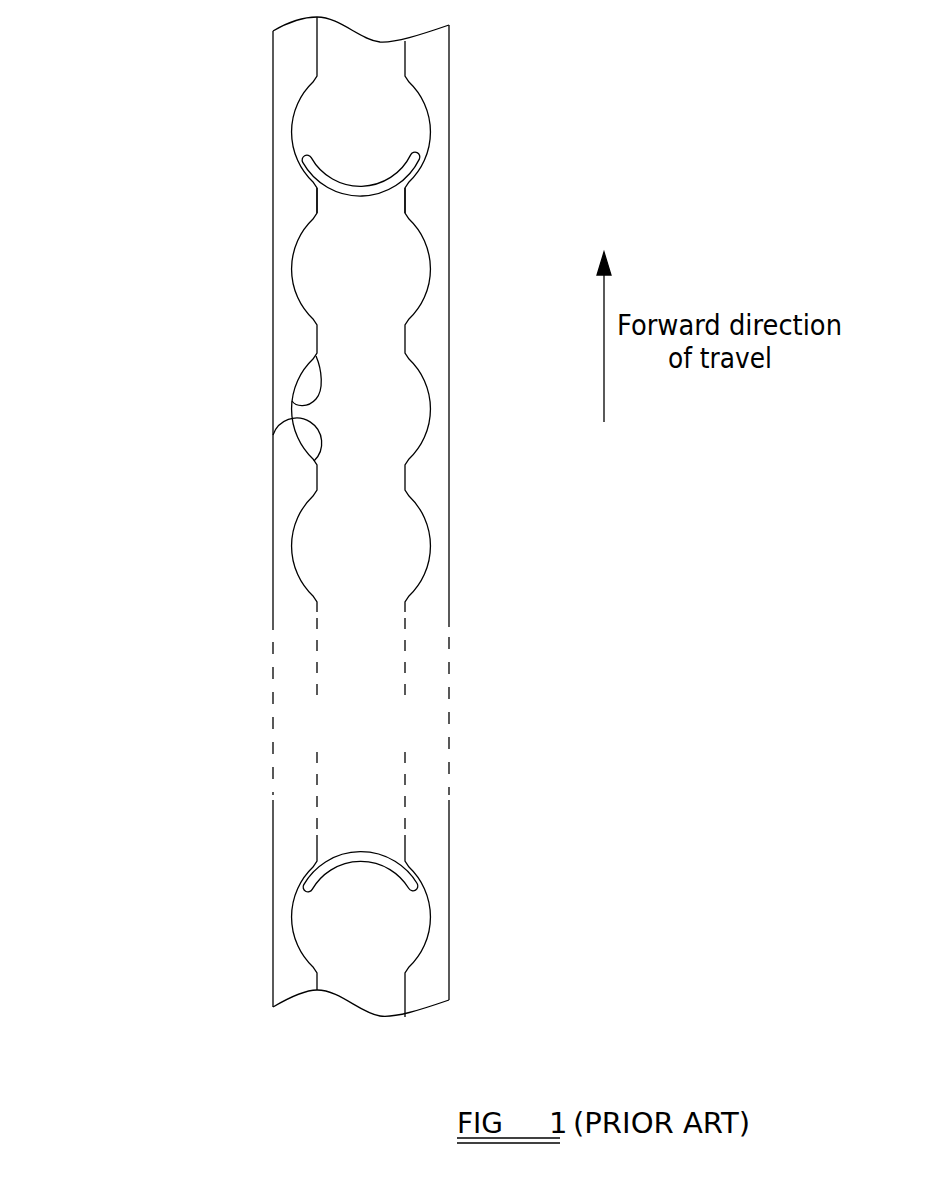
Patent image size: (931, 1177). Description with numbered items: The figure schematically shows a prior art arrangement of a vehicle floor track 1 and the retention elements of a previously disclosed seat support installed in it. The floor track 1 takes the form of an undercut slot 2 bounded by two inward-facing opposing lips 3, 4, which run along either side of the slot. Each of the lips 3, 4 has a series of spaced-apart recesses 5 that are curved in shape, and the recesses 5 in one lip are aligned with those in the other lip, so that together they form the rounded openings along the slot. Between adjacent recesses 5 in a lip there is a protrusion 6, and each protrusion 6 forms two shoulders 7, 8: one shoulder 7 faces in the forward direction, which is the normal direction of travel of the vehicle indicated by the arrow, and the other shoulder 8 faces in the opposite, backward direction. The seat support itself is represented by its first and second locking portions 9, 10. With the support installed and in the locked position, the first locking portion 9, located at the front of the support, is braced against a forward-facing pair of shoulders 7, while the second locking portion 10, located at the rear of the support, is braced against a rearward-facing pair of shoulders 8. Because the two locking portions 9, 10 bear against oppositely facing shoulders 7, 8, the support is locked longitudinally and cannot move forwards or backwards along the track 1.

The floor track 1 is at (296, 517).
The undercut slot 2 is at (363, 517).
The lip 3 is at (289, 342).
The lip 4 is at (435, 335).
The recess 5 is at (293, 283).
The protrusion 6 is at (316, 207).
The shoulder 7 is at (273, 435).
The shoulder 8 is at (293, 403).
The first locking portion 9 is at (375, 177).
The second locking portion 10 is at (388, 871).